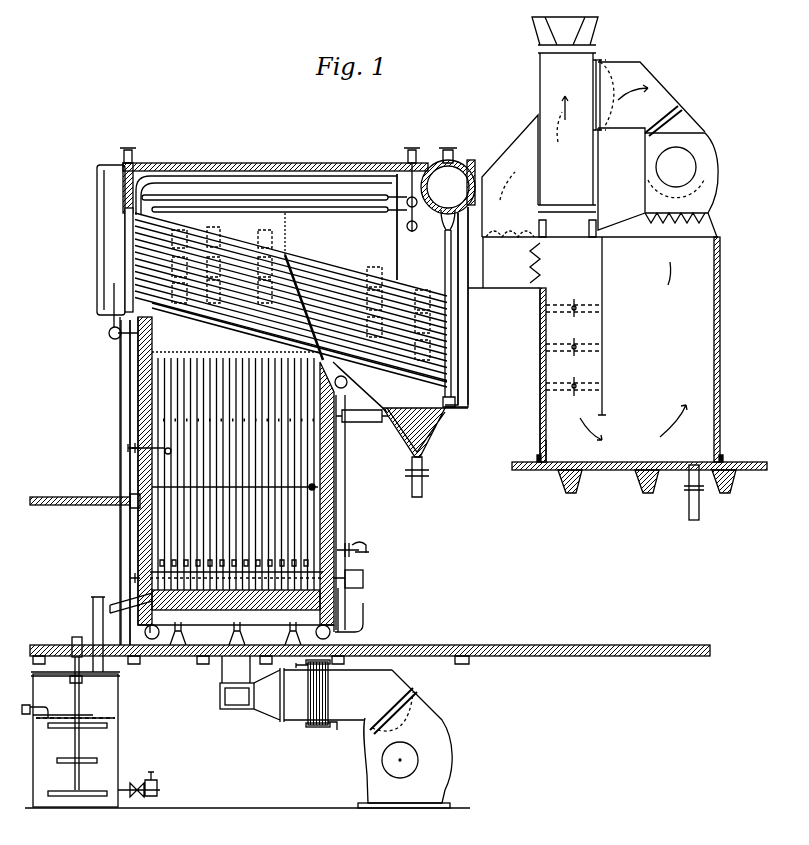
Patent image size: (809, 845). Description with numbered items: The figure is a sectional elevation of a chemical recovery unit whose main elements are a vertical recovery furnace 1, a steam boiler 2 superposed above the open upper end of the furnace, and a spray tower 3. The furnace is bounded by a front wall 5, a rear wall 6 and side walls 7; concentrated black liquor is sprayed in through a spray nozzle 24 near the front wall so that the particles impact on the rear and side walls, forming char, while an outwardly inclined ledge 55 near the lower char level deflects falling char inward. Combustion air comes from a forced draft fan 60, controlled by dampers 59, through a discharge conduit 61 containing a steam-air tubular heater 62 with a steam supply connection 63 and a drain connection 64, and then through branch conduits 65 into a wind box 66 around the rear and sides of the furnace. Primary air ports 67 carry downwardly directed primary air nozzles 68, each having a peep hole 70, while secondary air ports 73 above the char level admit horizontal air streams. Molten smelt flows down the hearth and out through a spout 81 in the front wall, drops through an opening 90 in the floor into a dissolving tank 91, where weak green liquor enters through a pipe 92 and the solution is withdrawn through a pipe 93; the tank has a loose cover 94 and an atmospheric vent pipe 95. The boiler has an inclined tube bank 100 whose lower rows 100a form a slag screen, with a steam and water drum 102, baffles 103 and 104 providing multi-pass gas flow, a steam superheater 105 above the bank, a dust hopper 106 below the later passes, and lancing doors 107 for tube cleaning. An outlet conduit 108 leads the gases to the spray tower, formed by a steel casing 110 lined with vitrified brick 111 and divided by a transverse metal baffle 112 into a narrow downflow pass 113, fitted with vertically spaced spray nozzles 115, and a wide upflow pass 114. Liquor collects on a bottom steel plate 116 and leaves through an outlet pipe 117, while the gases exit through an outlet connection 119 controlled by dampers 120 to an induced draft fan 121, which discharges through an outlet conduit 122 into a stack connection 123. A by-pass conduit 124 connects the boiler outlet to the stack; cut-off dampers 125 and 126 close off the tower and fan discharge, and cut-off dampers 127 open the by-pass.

The vertical recovery furnace 1 is at (138, 420).
The steam boiler 2 is at (97, 237).
The spray tower 3 is at (723, 343).
The front wall 5 is at (140, 530).
The rear wall 6 is at (334, 516).
The side wall 7 is at (152, 380).
The spray nozzle 24 is at (170, 448).
The outwardly inclined ledge 55 is at (268, 486).
The dampers 59 is at (394, 717).
The forced draft fan 60 is at (446, 755).
The discharge conduit 61 is at (355, 721).
The steam-air tubular heater 62 is at (308, 720).
The steam supply connection 63 is at (298, 668).
The drain connection 64 is at (335, 730).
The branch conduits 65 is at (222, 684).
The wind box 66 is at (364, 580).
The primary air ports 67 is at (249, 561).
The primary air nozzle 68 is at (342, 545).
The peep hole 70 is at (248, 591).
The secondary air ports 73 is at (241, 414).
The spout 81 is at (118, 600).
The opening 90 is at (82, 640).
The dissolving tank 91 is at (110, 734).
The pipe 92 is at (43, 710).
The pipe 93 is at (156, 792).
The loose cover 94 is at (72, 668).
The atmospheric vent pipe 95 is at (93, 608).
The horizontally inclined tube bank 100 is at (339, 261).
The lower rows 100a is at (200, 312).
The steam and water drum 102 is at (432, 210).
The baffle 103 is at (286, 224).
The baffle 104 is at (395, 245).
The steam superheater 105 is at (250, 194).
The dust hopper 106 is at (428, 442).
The lancing doors 107 is at (233, 234).
The outlet conduit 108 is at (498, 290).
The steel casing 110 is at (538, 419).
The vitrified brick 111 is at (545, 445).
The transverse metal baffle 112 is at (604, 327).
The downflow pass 113 is at (581, 373).
The upflow pass 114 is at (670, 372).
The spray nozzles 115 is at (575, 313).
The steel plate 116 is at (617, 468).
The outlet pipe 117 is at (700, 507).
The outlet connection 119 is at (708, 200).
The dampers 120 is at (680, 224).
The induced draft fan 121 is at (716, 162).
The outlet conduit 122 is at (664, 97).
The stack connection 123 is at (540, 68).
The by-pass conduit 124 is at (510, 147).
The cut-off damper 125 is at (545, 259).
The cut-off damper 126 is at (618, 66).
The cut-off dampers 127 is at (510, 246).